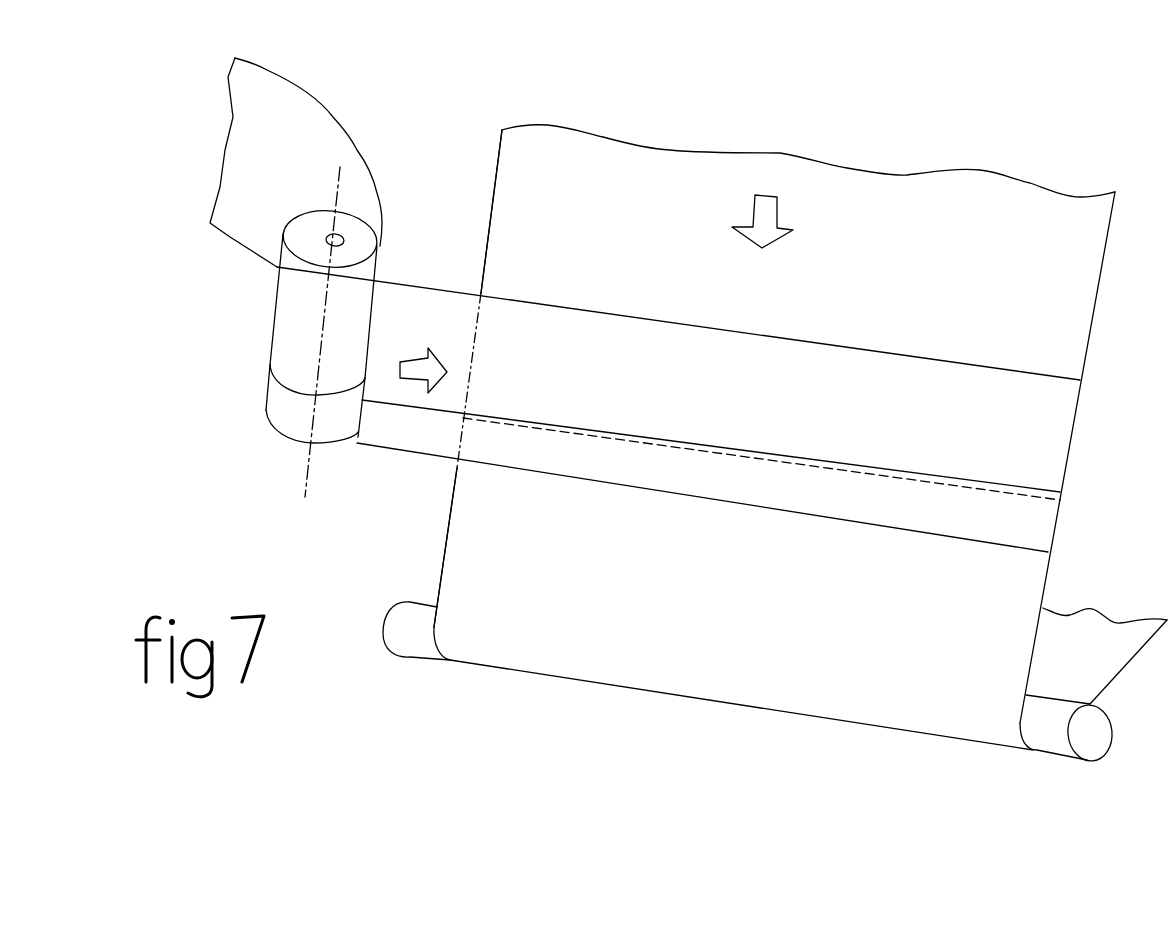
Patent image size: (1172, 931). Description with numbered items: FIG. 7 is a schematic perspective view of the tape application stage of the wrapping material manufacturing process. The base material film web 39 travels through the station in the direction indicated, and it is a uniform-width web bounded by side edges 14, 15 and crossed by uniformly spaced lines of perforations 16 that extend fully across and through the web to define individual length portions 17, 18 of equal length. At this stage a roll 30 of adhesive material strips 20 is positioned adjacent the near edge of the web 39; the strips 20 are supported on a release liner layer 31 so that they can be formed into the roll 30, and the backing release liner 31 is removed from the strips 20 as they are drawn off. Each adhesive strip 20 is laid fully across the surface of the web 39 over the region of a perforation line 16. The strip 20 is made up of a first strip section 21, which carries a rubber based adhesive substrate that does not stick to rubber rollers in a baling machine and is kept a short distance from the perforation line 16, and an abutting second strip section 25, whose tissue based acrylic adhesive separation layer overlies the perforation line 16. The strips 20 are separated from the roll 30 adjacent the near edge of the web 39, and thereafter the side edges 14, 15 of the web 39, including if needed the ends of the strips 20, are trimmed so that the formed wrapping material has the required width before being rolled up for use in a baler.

The side edge 14 is at (490, 210).
The side edge 15 is at (1050, 572).
The line of perforations 16 is at (545, 431).
The individual length portion 17 is at (517, 193).
The individual length portion 18 is at (465, 553).
The adhesive material strip 20 is at (413, 345).
The first strip section 21 is at (290, 303).
The second strip section 25 is at (285, 415).
The roll of adhesive material strips 30 is at (279, 332).
The release liner layer 31 is at (352, 175).
The base material film web 39 is at (530, 162).